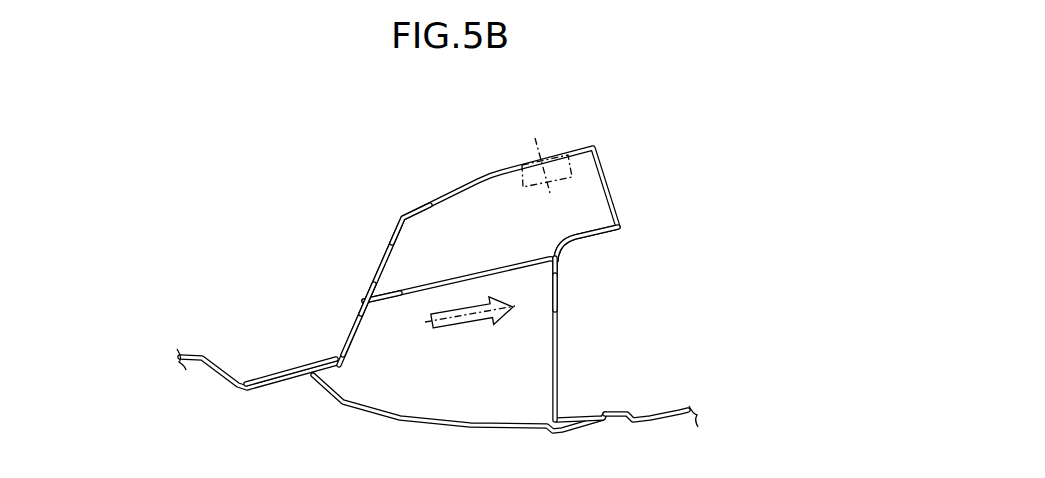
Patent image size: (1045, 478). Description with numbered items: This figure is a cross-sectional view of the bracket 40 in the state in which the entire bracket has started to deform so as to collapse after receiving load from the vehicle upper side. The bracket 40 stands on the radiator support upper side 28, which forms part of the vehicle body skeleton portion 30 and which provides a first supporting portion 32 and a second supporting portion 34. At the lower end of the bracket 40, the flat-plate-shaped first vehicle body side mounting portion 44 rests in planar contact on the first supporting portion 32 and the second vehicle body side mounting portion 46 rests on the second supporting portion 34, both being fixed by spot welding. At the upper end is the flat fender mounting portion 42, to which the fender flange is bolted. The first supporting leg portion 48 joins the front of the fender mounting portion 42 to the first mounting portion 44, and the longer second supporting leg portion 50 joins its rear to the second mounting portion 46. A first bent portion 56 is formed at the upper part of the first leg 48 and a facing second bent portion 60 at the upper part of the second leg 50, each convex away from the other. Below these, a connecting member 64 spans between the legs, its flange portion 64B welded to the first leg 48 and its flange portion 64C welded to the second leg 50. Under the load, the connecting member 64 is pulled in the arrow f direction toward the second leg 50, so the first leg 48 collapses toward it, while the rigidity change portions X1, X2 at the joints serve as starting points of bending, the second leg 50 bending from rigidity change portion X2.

The radiator support upper side 28 is at (541, 377).
The vehicle body skeleton portion 30 is at (458, 403).
The first supporting portion 32 is at (266, 376).
The second supporting portion 34 is at (603, 415).
The bracket 40 is at (655, 171).
The fender mounting portion 42 is at (575, 146).
The first vehicle body side mounting portion 44 is at (290, 368).
The second vehicle body side mounting portion 46 is at (585, 417).
The first supporting leg portion 48 is at (382, 238).
The second supporting leg portion 50 is at (584, 290).
The first bent portion 56 is at (399, 214).
The second bent portion 60 is at (630, 230).
The connecting member 64 is at (470, 257).
The flange portion 64B is at (376, 318).
The flange portion 64C is at (548, 305).
The rigidity change portion X1 is at (360, 295).
The rigidity change portion X2 is at (570, 262).
The arrow f direction f is at (475, 324).